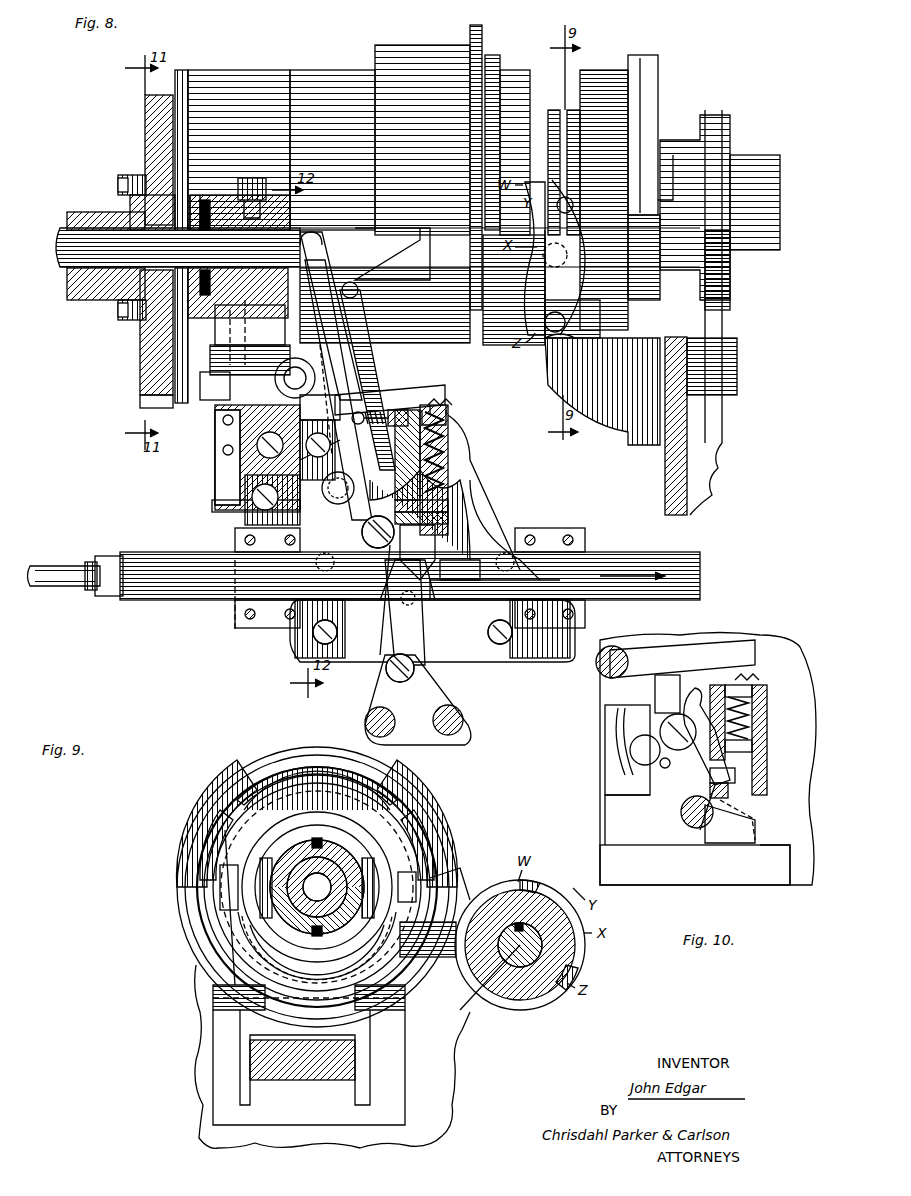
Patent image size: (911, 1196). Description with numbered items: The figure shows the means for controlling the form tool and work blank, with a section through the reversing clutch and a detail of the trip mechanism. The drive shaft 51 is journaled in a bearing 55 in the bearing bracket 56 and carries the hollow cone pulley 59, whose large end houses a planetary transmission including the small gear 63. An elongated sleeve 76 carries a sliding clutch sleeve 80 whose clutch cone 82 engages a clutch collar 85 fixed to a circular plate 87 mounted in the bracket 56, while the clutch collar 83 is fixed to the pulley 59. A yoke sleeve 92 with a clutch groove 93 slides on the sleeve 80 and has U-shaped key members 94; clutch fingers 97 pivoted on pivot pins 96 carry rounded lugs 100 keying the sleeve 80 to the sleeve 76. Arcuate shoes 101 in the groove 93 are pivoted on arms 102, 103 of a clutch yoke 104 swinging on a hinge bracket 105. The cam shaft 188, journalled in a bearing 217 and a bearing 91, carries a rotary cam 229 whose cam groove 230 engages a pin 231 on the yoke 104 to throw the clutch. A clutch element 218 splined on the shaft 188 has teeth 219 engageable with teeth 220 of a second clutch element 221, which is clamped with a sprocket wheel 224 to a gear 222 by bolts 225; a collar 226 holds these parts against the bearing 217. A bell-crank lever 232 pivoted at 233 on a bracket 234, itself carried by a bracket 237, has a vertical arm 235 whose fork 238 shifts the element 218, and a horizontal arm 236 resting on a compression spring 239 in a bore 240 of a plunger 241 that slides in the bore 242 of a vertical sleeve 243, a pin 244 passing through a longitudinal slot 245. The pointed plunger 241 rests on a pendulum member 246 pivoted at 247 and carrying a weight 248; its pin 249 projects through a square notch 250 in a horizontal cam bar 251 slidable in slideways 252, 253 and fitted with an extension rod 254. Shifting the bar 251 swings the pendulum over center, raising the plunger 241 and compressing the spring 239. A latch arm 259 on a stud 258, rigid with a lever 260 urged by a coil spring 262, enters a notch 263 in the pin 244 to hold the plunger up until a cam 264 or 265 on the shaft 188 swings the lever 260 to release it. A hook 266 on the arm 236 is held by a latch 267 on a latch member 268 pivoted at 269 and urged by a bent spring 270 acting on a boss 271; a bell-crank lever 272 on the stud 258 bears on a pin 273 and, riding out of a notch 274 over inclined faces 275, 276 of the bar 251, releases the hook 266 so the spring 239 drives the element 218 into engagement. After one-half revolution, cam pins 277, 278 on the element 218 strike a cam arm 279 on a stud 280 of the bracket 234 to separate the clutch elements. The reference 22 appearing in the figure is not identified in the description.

In FIG. 8, the arrow direction 22 is at (475, 440).
In FIG. 9, the drive shaft 51 is at (353, 963).
In FIG. 8, the bearing 55 is at (680, 150).
In FIG. 8, the bearing bracket 56 is at (710, 320).
In FIG. 9, the bearing bracket 56 is at (202, 1066).
In FIG. 8, the hollow cone pulley 59 is at (440, 53).
In FIG. 9, the small gear 63 is at (370, 842).
In FIG. 9, the elongated sleeve 76 is at (345, 835).
In FIG. 9, the clutch sleeve 80 is at (320, 838).
In FIG. 9, the clutch cone 82 is at (275, 790).
In FIG. 8, the clutch collar 83 is at (525, 80).
In FIG. 8, the clutch collar 85 is at (616, 80).
In FIG. 9, the clutch collar 85 is at (250, 812).
In FIG. 8, the circular plate 87 is at (647, 60).
In FIG. 8, the bearing 91 is at (660, 245).
In FIG. 8, the yoke sleeve 92 is at (548, 113).
In FIG. 9, the yoke sleeve 92 is at (287, 795).
In FIG. 8, the clutch groove 93 is at (567, 120).
In FIG. 9, the clutch groove 93 is at (234, 822).
In FIG. 9, the U-shaped key members 94 is at (405, 868).
In FIG. 9, the pivot pins 96 is at (390, 850).
In FIG. 9, the clutch fingers 97 is at (260, 910).
In FIG. 9, the rounded lugs 100 is at (360, 955).
In FIG. 9, the arcuate shoes 101 is at (245, 863).
In FIG. 9, the arm of clutch yoke 102 is at (225, 912).
In FIG. 9, the arm of clutch yoke 103 is at (455, 895).
In FIG. 9, the clutch yoke 104 is at (227, 960).
In FIG. 9, the hinge bracket 105 is at (246, 1050).
In FIG. 8, the cam shaft 188 is at (68, 227).
In FIG. 9, the cam shaft 188 is at (472, 1006).
In FIG. 8, the bearing 217 is at (80, 283).
In FIG. 8, the clutch element 218 is at (230, 181).
In FIG. 8, the clutch teeth 219 is at (208, 200).
In FIG. 8, the clutch teeth 220 is at (198, 203).
In FIG. 8, the second clutch element 221 is at (192, 195).
In FIG. 8, the gear 222 is at (145, 122).
In FIG. 8, the sprocket wheel 224 is at (125, 326).
In FIG. 8, the bolts 225 is at (126, 177).
In FIG. 8, the collar 226 is at (132, 211).
In FIG. 8, the rotary cam 229 is at (575, 205).
In FIG. 9, the rotary cam 229 is at (561, 943).
In FIG. 8, the peripheral cam groove 230 is at (573, 218).
In FIG. 9, the peripheral cam groove 230 is at (538, 888).
In FIG. 9, the pin 231 is at (433, 958).
In FIG. 8, the bell-crank lever 232 is at (257, 457).
In FIG. 8, the pivot 233 is at (295, 368).
In FIG. 10, the pivot 233 is at (626, 662).
In FIG. 8, the bracket 234 is at (213, 468).
In FIG. 8, the vertical arm 235 is at (347, 327).
In FIG. 8, the horizontal arm 236 is at (440, 382).
In FIG. 10, the horizontal arm 236 is at (702, 655).
In FIG. 8, the bracket 237 is at (473, 455).
In FIG. 8, the fork 238 is at (313, 246).
In FIG. 8, the coiled compression spring 239 is at (444, 408).
In FIG. 10, the coiled compression spring 239 is at (750, 673).
In FIG. 8, the bore 240 is at (456, 440).
In FIG. 10, the bore 240 is at (765, 745).
In FIG. 8, the plunger 241 is at (450, 455).
In FIG. 10, the plunger 241 is at (765, 728).
In FIG. 8, the bore 242 is at (450, 472).
In FIG. 10, the bore 242 is at (765, 695).
In FIG. 8, the vertical sleeve 243 is at (450, 487).
In FIG. 10, the vertical sleeve 243 is at (765, 712).
In FIG. 8, the pin 244 is at (461, 453).
In FIG. 10, the pin 244 is at (732, 775).
In FIG. 8, the longitudinal slot 245 is at (417, 551).
In FIG. 10, the longitudinal slot 245 is at (735, 791).
In FIG. 8, the pendulum member 246 is at (430, 643).
In FIG. 8, the pivot 247 is at (415, 671).
In FIG. 8, the weight 248 is at (436, 696).
In FIG. 8, the pin 249 is at (405, 612).
In FIG. 8, the square notch 250 is at (450, 604).
In FIG. 8, the horizontal cam bar 251 is at (660, 558).
In FIG. 10, the horizontal cam bar 251 is at (718, 875).
In FIG. 8, the slideway 252 is at (238, 533).
In FIG. 8, the slideway 253 is at (585, 543).
In FIG. 8, the extension rod 254 is at (75, 562).
In FIG. 8, the stud 258 is at (373, 600).
In FIG. 10, the stud 258 is at (690, 821).
In FIG. 8, the latch arm 259 is at (369, 532).
In FIG. 10, the latch arm 259 is at (688, 805).
In FIG. 8, the lever 260 is at (363, 415).
In FIG. 8, the coil spring 262 is at (395, 411).
In FIG. 8, the notch 263 is at (340, 562).
In FIG. 8, the cam 264 is at (396, 230).
In FIG. 8, the cam 265 is at (425, 280).
In FIG. 8, the hook 266 is at (317, 442).
In FIG. 10, the hook 266 is at (668, 675).
In FIG. 8, the latch 267 is at (321, 394).
In FIG. 10, the latch 267 is at (693, 690).
In FIG. 8, the latch member 268 is at (427, 605).
In FIG. 10, the latch member 268 is at (685, 788).
In FIG. 8, the pivot 269 is at (297, 462).
In FIG. 10, the pivot 269 is at (675, 730).
In FIG. 8, the bent spring 270 is at (248, 487).
In FIG. 10, the bent spring 270 is at (605, 707).
In FIG. 8, the boss 271 is at (262, 578).
In FIG. 10, the boss 271 is at (640, 748).
In FIG. 8, the bell-crank lever 272 is at (477, 531).
In FIG. 10, the bell-crank lever 272 is at (720, 836).
In FIG. 8, the pin 273 is at (338, 488).
In FIG. 10, the pin 273 is at (663, 768).
In FIG. 8, the notch 274 is at (467, 573).
In FIG. 10, the notch 274 is at (780, 847).
In FIG. 8, the inclined end face 275 is at (407, 580).
In FIG. 10, the inclined end face 275 is at (762, 843).
In FIG. 8, the inclined end face 276 is at (488, 562).
In FIG. 8, the cam pin 277 is at (286, 177).
In FIG. 8, the cam pin 278 is at (328, 390).
In FIG. 8, the cam arm 279 is at (218, 338).
In FIG. 8, the stud 280 is at (215, 400).